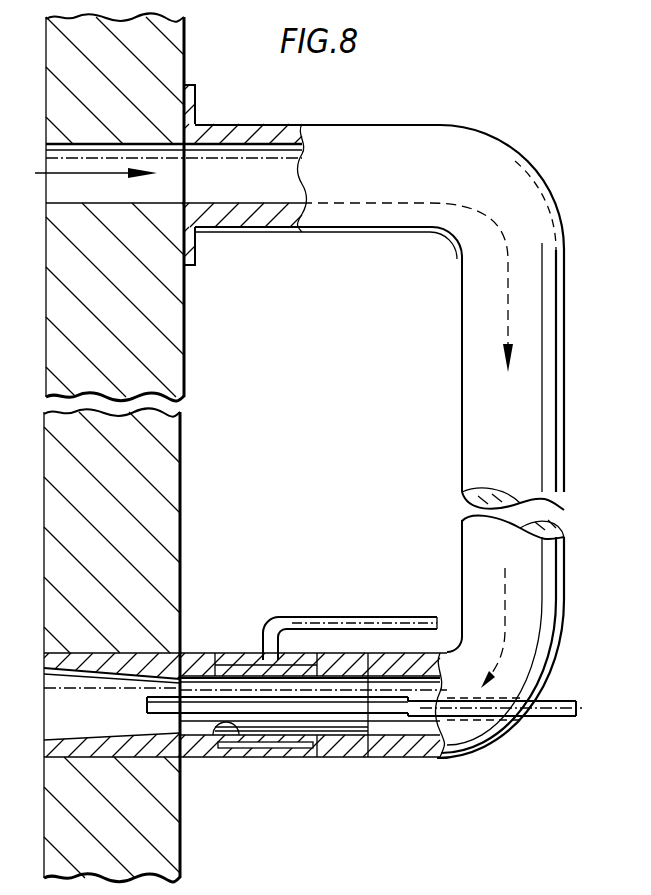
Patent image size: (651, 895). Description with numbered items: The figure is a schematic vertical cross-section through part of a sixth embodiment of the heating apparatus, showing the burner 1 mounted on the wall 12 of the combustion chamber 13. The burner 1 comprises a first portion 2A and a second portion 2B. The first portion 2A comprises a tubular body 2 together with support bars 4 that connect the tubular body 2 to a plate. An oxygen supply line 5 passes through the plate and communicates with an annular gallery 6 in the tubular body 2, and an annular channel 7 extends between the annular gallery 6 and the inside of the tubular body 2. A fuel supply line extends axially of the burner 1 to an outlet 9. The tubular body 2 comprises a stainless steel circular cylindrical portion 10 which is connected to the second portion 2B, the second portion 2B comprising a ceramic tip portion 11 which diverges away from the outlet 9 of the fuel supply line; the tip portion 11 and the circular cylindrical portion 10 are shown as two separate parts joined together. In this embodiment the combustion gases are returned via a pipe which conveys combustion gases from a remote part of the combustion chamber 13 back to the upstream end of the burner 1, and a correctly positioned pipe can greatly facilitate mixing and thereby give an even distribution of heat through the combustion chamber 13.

The burner 1 is at (232, 842).
The tubular body 2 is at (252, 656).
The first portion 2A is at (200, 768).
The second portion 2B is at (178, 768).
The support bars 4 is at (389, 748).
The oxygen supply line 5 is at (352, 617).
The annular gallery 6 is at (222, 667).
The annular channel 7 is at (341, 748).
The outlet 9 is at (147, 705).
The circular cylindrical portion 10 is at (237, 745).
The tip portion 11 is at (92, 741).
The wall 12 is at (82, 446).
The combustion chamber 13 is at (40, 562).